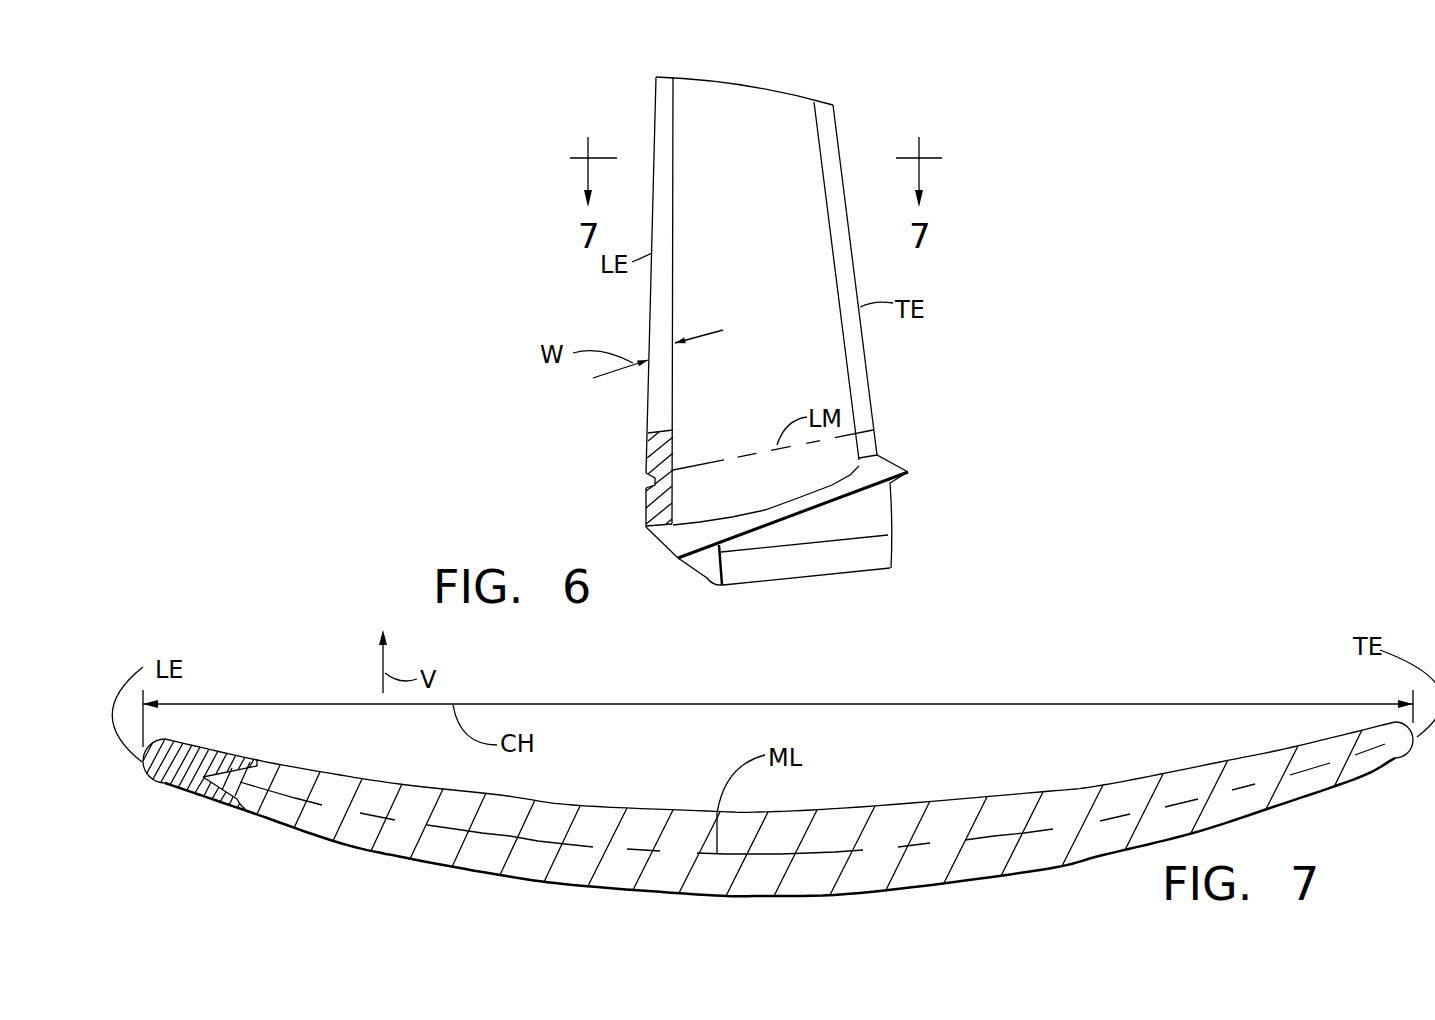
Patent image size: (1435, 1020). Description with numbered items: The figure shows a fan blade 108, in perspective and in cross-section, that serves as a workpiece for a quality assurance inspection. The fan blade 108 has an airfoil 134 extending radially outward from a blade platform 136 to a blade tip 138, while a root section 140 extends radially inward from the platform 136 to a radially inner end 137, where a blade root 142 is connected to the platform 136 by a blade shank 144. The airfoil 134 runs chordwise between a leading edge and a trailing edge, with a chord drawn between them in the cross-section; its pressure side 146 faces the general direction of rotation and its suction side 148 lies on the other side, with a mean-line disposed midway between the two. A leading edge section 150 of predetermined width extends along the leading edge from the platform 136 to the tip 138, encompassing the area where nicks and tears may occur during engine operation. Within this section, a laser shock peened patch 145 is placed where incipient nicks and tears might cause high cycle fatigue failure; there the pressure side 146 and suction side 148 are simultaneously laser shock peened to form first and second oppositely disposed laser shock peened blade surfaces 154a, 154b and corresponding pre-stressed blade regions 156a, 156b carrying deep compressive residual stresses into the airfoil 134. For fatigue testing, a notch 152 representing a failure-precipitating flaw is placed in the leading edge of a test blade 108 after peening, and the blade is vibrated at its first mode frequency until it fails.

In FIG. 6, the fan blade 108 is at (868, 97).
In FIG. 7, the fan blade 108 is at (855, 782).
In FIG. 6, the airfoil 134 is at (758, 231).
In FIG. 6, the blade platform 136 is at (885, 465).
In FIG. 6, the radially inner end 137 is at (827, 573).
In FIG. 6, the blade tip 138 is at (745, 84).
In FIG. 6, the root section 140 is at (889, 533).
In FIG. 6, the blade root 142 is at (707, 572).
In FIG. 6, the blade shank 144 is at (890, 503).
In FIG. 6, the laser shock peened patch 145 is at (671, 441).
In FIG. 7, the laser shock peened patch 145 is at (192, 722).
In FIG. 7, the pressure side 146 is at (565, 803).
In FIG. 7, the suction side 148 is at (460, 872).
In FIG. 6, the leading edge section 150 is at (675, 400).
In FIG. 7, the leading edge section 150 is at (143, 762).
In FIG. 6, the notch 152 is at (655, 478).
In FIG. 6, the first laser shock peened blade surface 154a is at (662, 507).
In FIG. 7, the first laser shock peened blade surface 154a is at (213, 748).
In FIG. 7, the second laser shock peened blade surface 154b is at (188, 804).
In FIG. 7, the first pre-stressed blade region 156a is at (258, 762).
In FIG. 7, the second pre-stressed blade region 156b is at (235, 800).